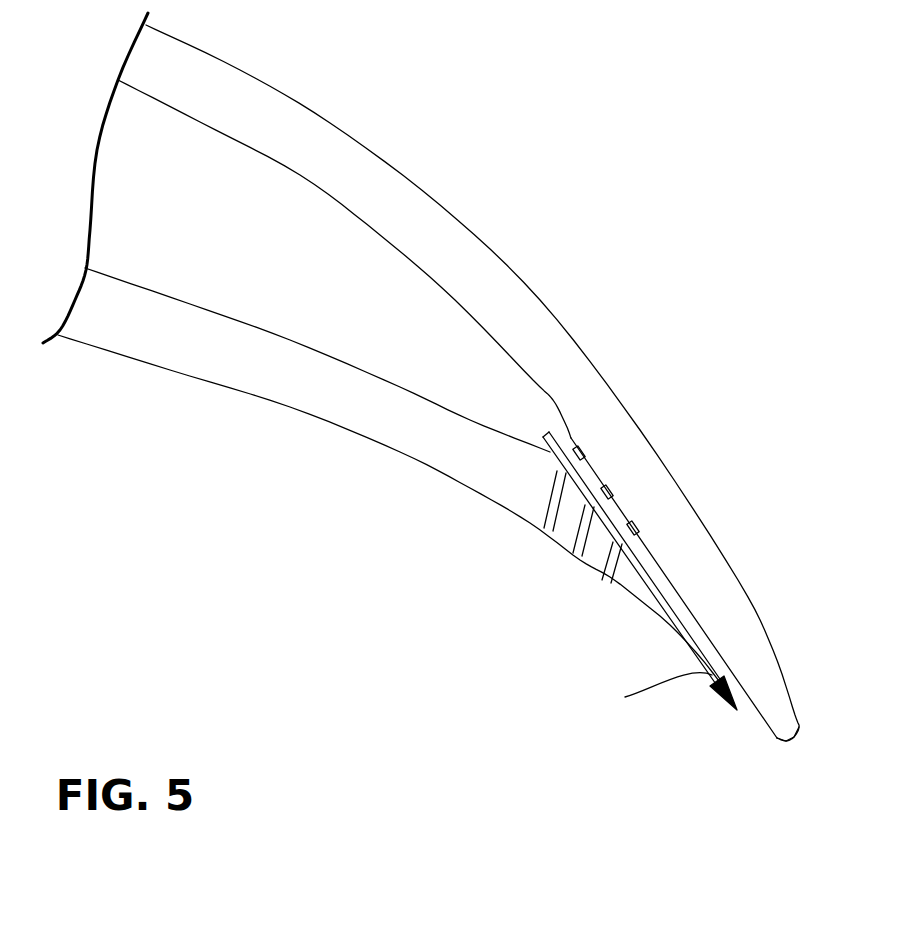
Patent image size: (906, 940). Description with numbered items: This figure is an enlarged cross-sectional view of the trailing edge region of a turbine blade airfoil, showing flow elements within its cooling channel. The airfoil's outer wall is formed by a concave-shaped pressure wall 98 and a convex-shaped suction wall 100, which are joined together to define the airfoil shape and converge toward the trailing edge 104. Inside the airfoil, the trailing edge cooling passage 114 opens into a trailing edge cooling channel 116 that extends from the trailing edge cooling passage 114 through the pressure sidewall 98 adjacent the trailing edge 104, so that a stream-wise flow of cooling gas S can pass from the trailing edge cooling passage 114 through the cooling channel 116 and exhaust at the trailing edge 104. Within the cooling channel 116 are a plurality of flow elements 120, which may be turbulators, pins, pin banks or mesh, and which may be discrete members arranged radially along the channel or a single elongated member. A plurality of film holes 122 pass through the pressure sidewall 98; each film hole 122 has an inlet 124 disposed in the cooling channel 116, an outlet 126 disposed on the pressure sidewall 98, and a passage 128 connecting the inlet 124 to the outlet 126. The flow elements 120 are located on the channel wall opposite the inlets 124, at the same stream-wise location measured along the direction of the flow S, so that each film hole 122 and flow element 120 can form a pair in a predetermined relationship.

The pressure wall 98 is at (212, 383).
The suction wall 100 is at (363, 143).
The trailing edge 104 is at (790, 738).
The trailing edge cooling passage 114 is at (241, 246).
The trailing edge cooling channel 116 is at (668, 578).
The flow elements 120 is at (634, 527).
The film holes 122 is at (566, 534).
The inlet 124 is at (548, 452).
The outlet 126 is at (522, 561).
The passage 128 is at (547, 508).
The stream-wise gas flow S is at (669, 692).